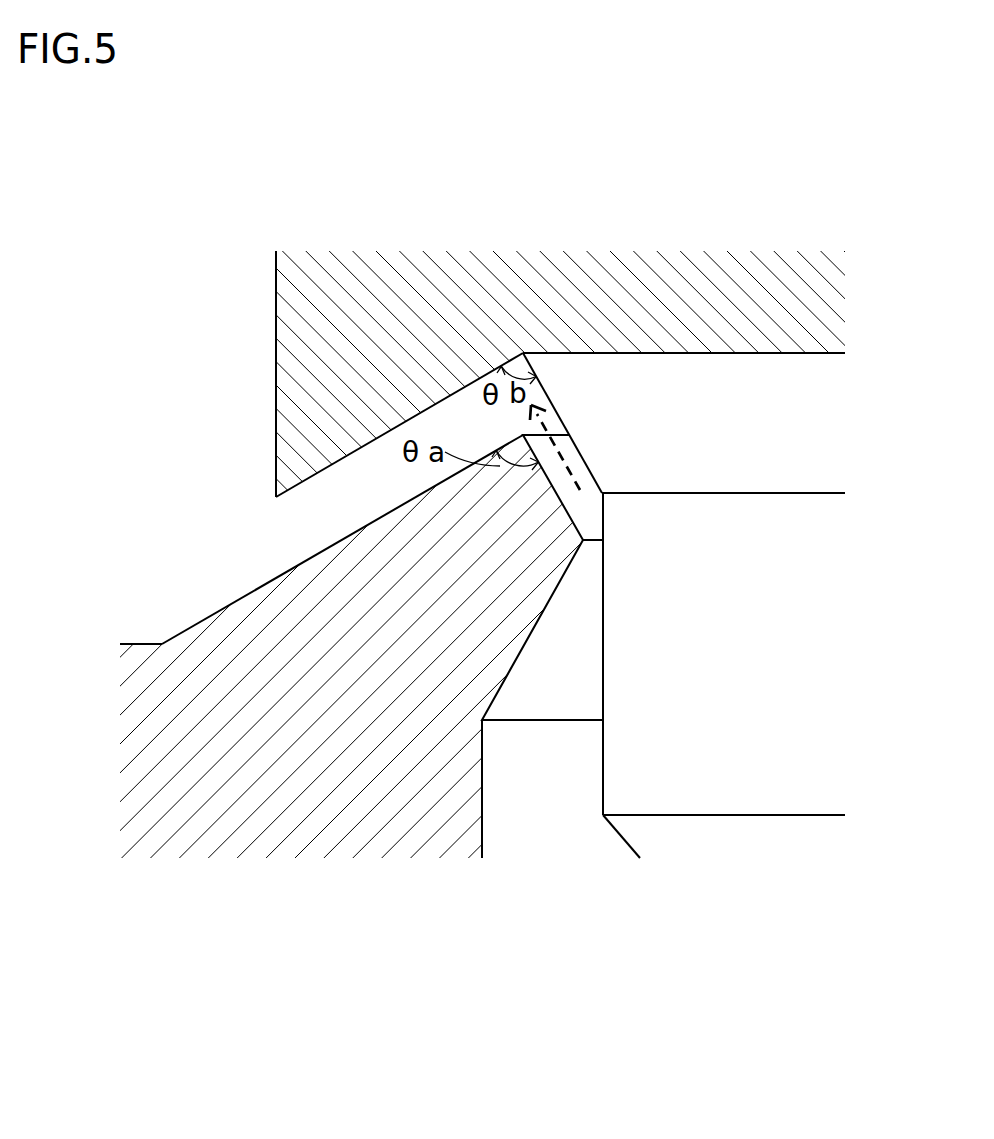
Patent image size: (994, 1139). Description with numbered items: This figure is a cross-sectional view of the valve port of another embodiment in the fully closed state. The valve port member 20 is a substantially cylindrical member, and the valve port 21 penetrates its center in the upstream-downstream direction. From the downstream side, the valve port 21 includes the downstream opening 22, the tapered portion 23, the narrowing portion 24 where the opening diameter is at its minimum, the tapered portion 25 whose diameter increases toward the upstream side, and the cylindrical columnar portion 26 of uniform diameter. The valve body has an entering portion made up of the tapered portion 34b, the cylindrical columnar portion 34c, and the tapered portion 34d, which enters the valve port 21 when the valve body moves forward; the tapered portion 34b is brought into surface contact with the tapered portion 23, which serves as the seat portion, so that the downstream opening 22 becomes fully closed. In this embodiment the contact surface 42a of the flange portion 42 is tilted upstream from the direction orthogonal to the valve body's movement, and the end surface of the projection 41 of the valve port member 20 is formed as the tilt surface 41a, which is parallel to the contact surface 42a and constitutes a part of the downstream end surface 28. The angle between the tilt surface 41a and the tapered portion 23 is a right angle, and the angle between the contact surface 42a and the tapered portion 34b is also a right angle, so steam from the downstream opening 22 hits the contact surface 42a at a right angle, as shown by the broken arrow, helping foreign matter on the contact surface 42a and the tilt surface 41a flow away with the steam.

The valve port member 20 is at (108, 760).
The valve port 21 is at (528, 569).
The downstream opening 22 is at (558, 430).
The tapered portion 23 is at (602, 493).
The narrowing portion 24 is at (593, 560).
The tapered portion 25 is at (528, 650).
The cylindrical columnar portion 26 is at (484, 838).
The downstream end surface 28 is at (140, 643).
The tapered portion 34b is at (768, 428).
The cylindrical columnar portion 34c is at (766, 662).
The tapered portion 34d is at (762, 841).
The projection 41 is at (263, 620).
The tilt surface 41a is at (273, 579).
The flange portion 42 is at (305, 330).
The contact surface 42a is at (312, 477).